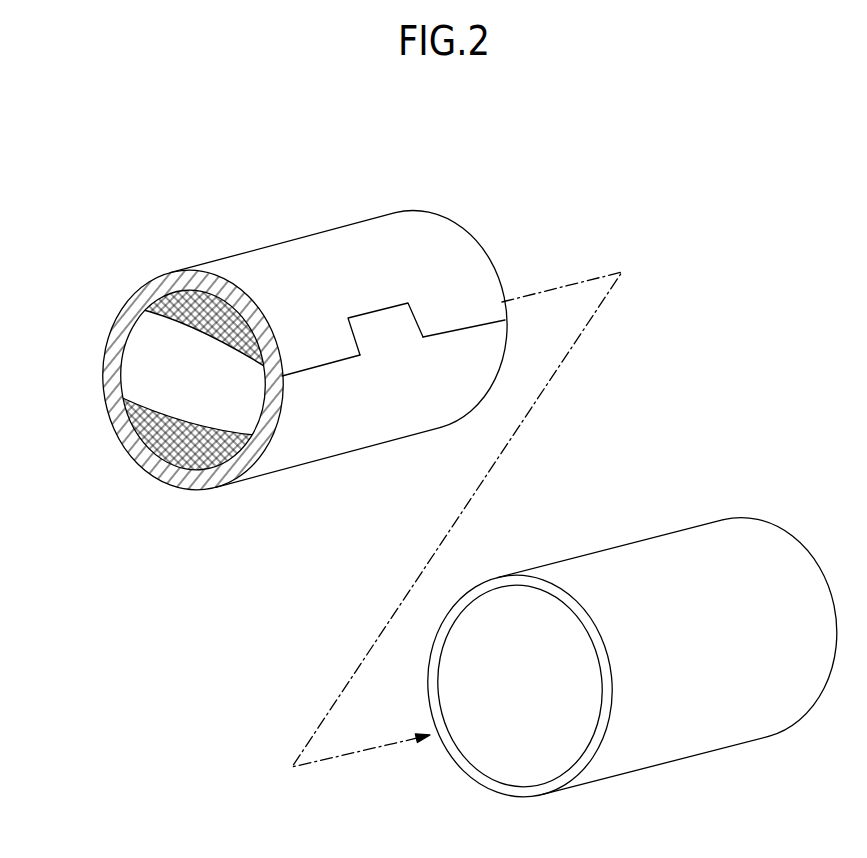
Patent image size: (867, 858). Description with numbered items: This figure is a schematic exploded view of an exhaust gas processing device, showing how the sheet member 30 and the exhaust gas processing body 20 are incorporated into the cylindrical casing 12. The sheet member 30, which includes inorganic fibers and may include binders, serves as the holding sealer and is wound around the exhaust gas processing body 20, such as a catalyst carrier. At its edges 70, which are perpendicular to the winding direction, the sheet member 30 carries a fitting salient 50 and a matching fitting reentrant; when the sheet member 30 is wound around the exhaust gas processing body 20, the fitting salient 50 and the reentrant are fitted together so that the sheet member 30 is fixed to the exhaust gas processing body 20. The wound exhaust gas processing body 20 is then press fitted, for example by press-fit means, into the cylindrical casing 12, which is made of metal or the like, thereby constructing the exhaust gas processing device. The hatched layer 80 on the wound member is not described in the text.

The cylindrical casing 12 is at (698, 743).
The exhaust gas processing body 20 is at (133, 370).
The sheet member 30 is at (363, 226).
The fitting salient 50 is at (389, 330).
The edge 70 is at (463, 327).
The outer layer 80 is at (122, 295).